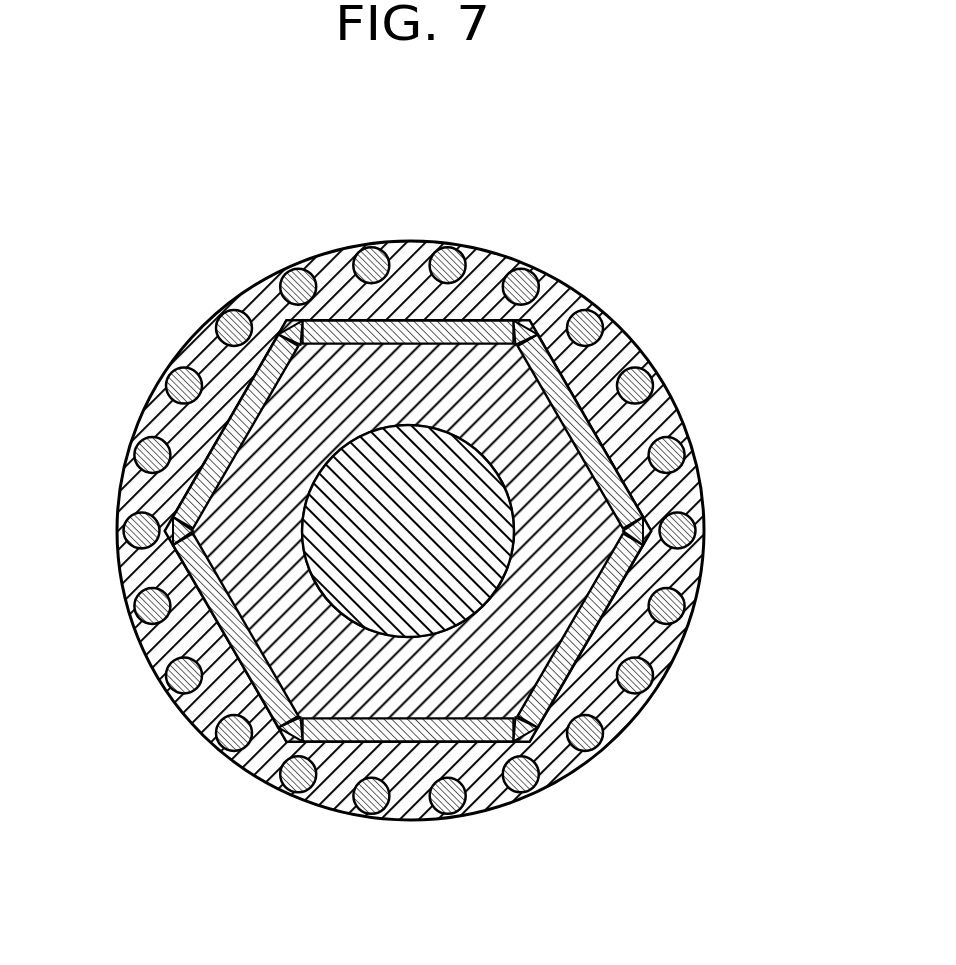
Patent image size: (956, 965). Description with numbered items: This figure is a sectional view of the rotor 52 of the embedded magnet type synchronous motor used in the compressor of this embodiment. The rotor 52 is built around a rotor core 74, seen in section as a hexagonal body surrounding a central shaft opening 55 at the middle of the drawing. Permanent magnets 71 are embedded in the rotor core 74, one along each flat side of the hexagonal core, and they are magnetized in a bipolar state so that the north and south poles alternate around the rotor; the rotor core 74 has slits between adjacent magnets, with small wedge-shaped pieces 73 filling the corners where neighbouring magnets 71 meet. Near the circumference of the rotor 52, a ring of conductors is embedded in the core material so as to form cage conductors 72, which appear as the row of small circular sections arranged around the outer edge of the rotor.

The rotor 52 is at (742, 404).
The shaft 55 is at (330, 562).
The permanent magnets 71 is at (643, 560).
The cage conductors 72 is at (232, 314).
The wedge spacers 73 is at (518, 330).
The rotor core 74 is at (293, 657).